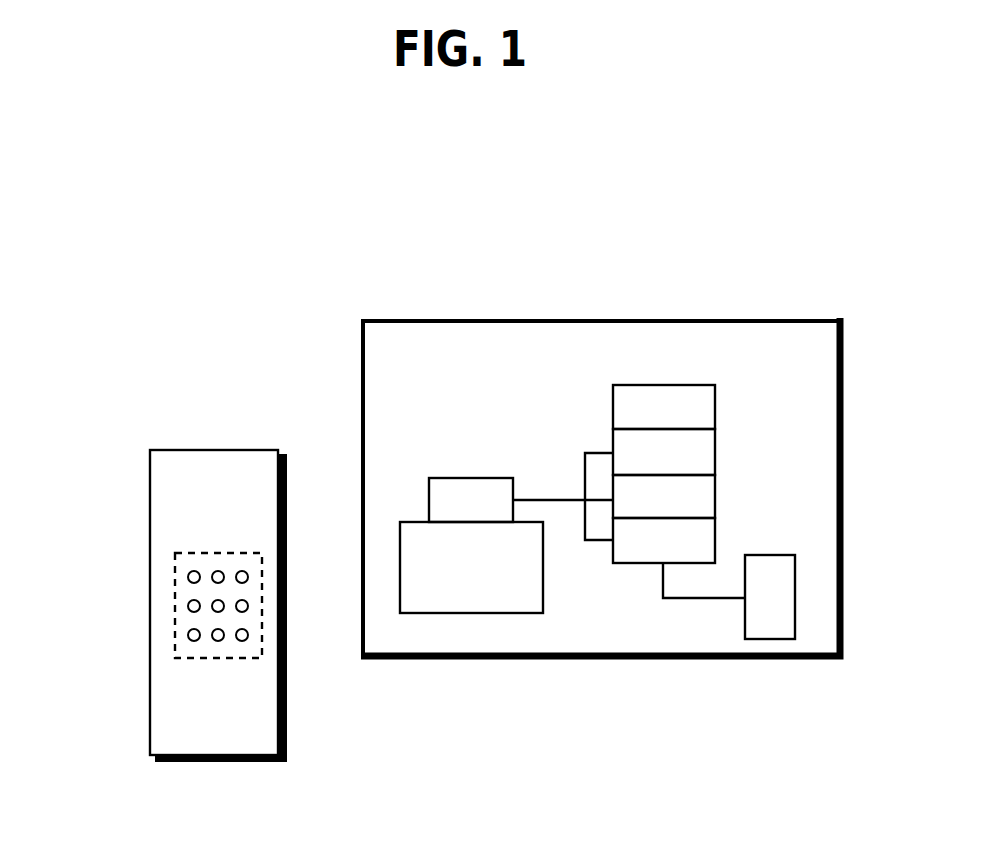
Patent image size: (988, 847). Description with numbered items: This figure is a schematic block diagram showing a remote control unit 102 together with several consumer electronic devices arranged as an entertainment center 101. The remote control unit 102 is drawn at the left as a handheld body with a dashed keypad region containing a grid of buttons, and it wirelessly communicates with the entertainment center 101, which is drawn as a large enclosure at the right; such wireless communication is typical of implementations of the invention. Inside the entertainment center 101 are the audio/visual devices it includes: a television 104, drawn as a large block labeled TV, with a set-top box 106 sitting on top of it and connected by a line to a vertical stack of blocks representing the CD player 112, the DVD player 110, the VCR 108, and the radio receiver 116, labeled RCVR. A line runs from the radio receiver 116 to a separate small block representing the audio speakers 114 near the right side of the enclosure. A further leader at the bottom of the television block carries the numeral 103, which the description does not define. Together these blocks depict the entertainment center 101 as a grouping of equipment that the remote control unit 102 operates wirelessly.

The entertainment center 101 is at (845, 608).
The remote control unit 102 is at (150, 722).
The television 103 is at (520, 605).
The television 104 is at (182, 553).
The set-top box 106 is at (469, 503).
The VCR 108 is at (715, 497).
The DVD player 110 is at (715, 452).
The CD player 112 is at (715, 403).
The audio speakers 114 is at (795, 598).
The radio receiver 116 is at (627, 563).